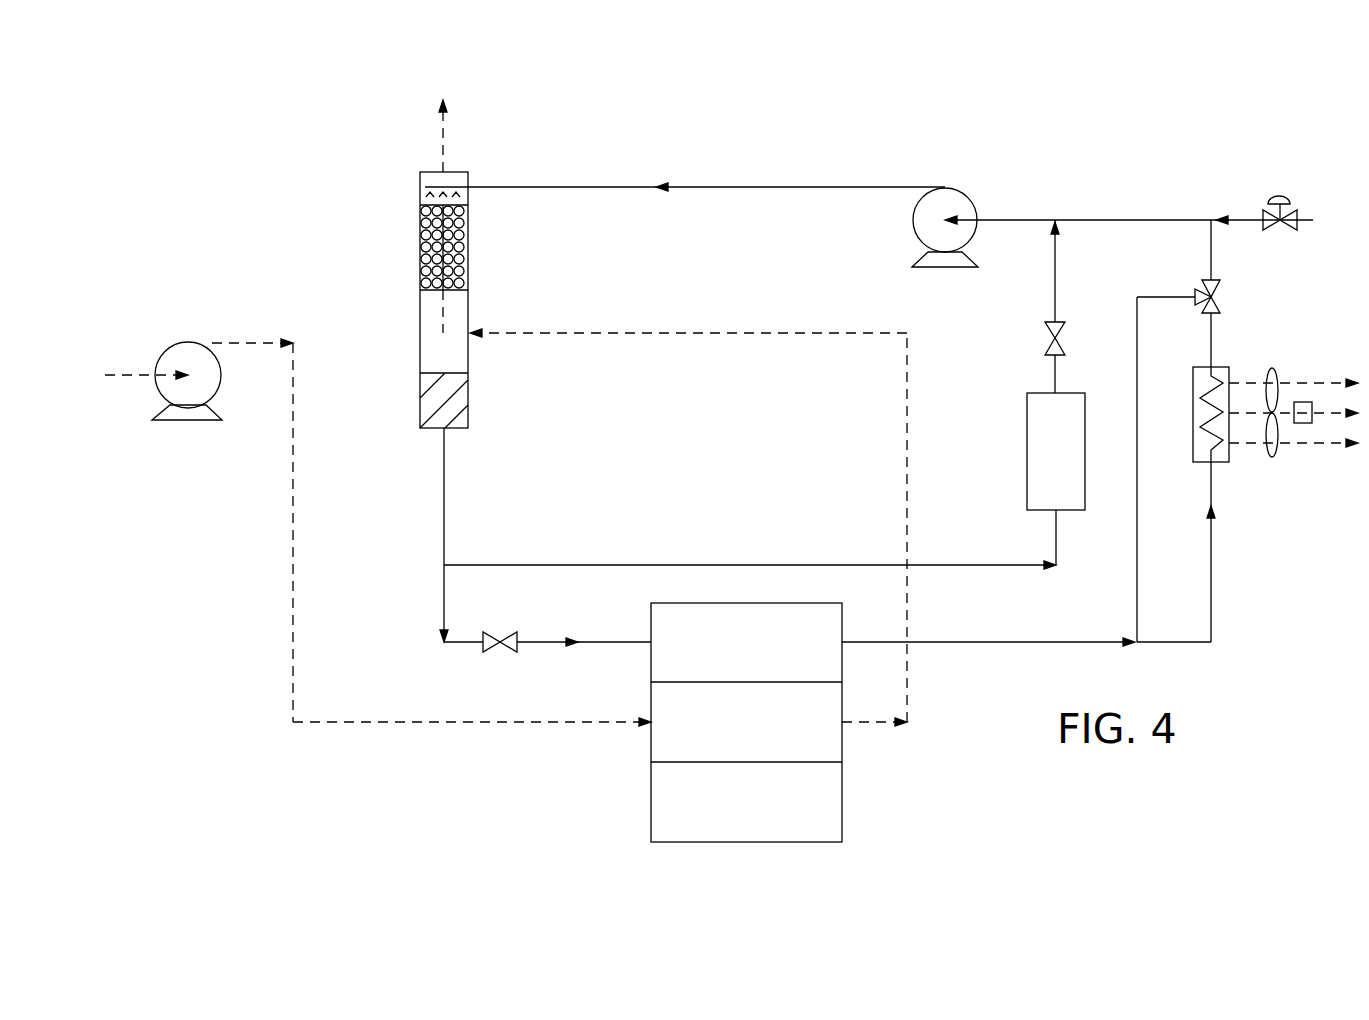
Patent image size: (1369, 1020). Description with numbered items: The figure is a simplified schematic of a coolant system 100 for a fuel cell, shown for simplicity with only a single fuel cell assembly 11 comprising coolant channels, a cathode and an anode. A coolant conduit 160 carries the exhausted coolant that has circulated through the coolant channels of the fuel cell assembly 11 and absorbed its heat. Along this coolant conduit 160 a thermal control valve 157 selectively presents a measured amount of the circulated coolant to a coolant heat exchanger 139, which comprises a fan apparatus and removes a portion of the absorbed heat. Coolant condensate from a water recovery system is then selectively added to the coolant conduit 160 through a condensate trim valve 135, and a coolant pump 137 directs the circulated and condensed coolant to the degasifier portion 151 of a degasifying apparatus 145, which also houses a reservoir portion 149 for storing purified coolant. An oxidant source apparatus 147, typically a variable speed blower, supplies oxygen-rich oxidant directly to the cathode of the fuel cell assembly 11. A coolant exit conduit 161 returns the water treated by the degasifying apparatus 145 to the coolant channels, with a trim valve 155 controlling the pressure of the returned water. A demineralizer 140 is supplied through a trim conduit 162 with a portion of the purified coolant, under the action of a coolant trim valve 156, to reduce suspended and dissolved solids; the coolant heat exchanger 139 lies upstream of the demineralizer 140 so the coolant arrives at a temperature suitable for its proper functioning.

The coolant system 100 is at (255, 202).
The oxidant source apparatus 147 is at (174, 330).
The degasifying apparatus 145 is at (395, 243).
The degasifier portion 151 is at (455, 245).
The reservoir portion 149 is at (462, 402).
The coolant exit conduit 161 is at (444, 515).
The trim conduit 162 is at (615, 565).
The trim valve 155 is at (500, 626).
The fuel cell assembly 11 is at (870, 776).
The coolant conduit 160 is at (740, 187).
The coolant pump 137 is at (932, 180).
The condensate trim valve 135 is at (1306, 212).
The coolant trim valve 156 is at (1040, 330).
The demineralizer 140 is at (1027, 420).
The thermal control valve 157 is at (1192, 290).
The coolant heat exchanger 139 is at (1278, 360).